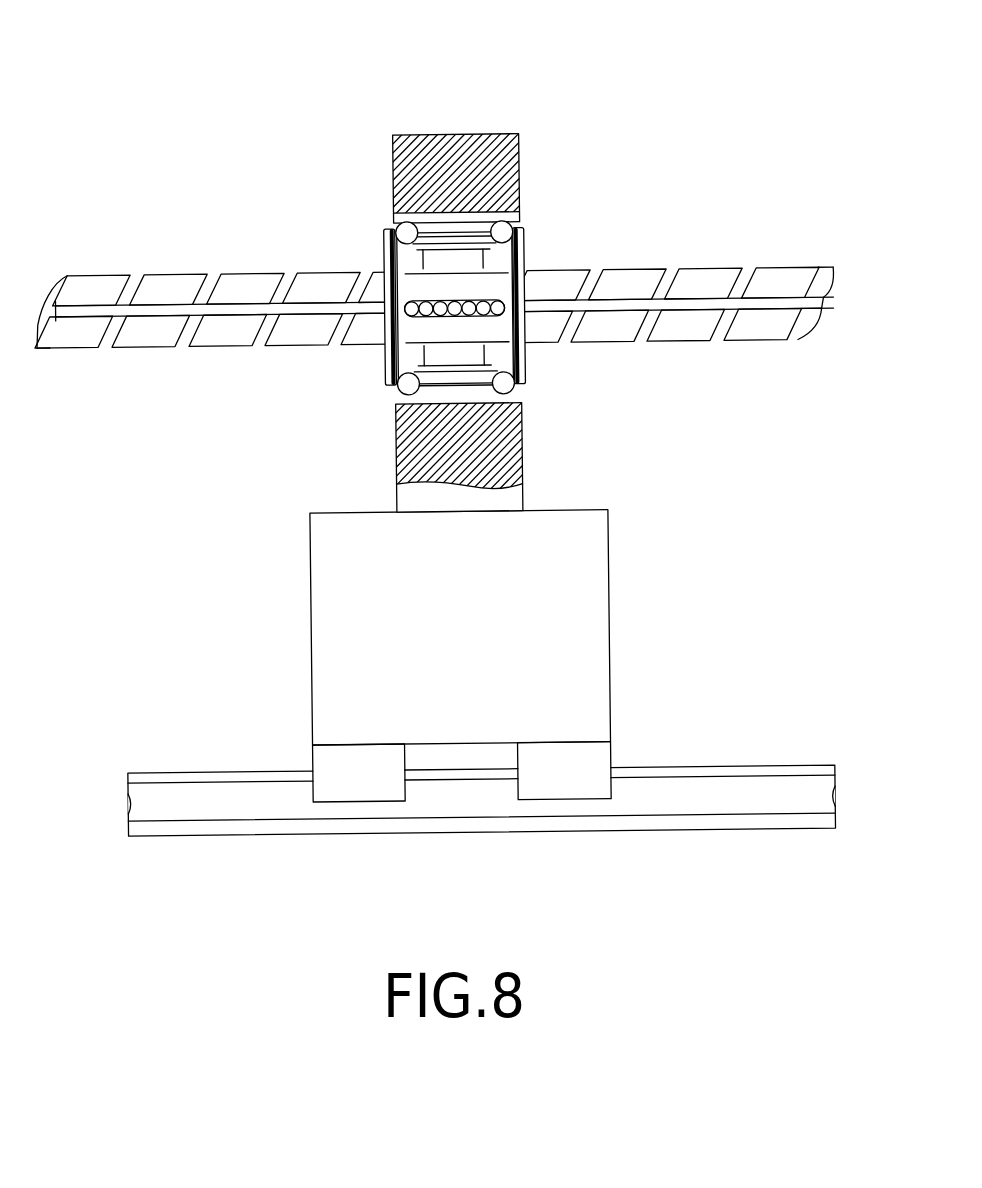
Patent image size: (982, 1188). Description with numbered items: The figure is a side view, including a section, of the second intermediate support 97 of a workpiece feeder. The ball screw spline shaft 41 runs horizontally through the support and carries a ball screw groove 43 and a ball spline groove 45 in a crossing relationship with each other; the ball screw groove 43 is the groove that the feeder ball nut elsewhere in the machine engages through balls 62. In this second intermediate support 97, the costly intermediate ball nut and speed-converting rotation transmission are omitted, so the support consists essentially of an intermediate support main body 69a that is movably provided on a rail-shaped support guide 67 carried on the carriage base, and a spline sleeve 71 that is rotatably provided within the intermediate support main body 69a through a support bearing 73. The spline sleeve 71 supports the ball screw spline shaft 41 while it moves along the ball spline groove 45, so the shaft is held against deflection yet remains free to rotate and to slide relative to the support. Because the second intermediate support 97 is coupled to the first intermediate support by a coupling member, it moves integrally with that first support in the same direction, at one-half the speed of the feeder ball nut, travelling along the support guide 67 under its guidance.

The second intermediate support 97 is at (450, 261).
The support bearing 73 is at (433, 222).
The spline sleeve 71 is at (531, 233).
The ball spline groove 45 is at (630, 301).
The ball screw groove 43 is at (689, 266).
The ball screw spline shaft 41 is at (454, 257).
The balls 62 is at (485, 300).
The intermediate support main body 69a is at (560, 550).
The support guide 67 is at (709, 782).